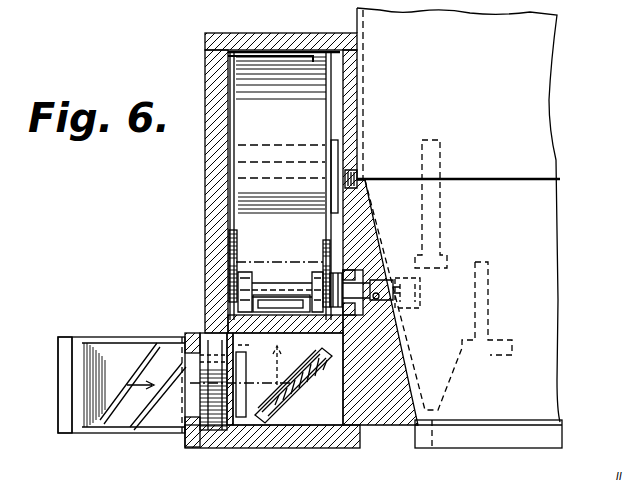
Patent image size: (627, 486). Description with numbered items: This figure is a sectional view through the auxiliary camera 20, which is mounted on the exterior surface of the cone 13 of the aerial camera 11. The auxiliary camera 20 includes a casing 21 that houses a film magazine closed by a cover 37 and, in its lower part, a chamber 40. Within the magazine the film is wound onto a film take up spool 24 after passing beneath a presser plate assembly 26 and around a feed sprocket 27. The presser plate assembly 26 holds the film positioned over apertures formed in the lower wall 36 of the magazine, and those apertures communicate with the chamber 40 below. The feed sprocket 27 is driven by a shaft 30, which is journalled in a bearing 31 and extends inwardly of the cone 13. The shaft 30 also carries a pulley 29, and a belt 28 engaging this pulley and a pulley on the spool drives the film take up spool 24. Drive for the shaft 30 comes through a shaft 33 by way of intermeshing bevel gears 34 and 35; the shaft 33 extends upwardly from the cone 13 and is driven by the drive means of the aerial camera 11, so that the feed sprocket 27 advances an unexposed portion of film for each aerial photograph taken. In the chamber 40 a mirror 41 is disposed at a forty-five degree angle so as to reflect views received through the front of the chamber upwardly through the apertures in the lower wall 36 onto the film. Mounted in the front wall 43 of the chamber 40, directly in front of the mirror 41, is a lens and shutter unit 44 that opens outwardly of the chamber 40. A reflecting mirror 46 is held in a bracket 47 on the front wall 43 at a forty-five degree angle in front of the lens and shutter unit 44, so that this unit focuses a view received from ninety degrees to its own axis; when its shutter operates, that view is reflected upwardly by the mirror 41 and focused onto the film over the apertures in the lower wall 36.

The aerial camera 11 is at (546, 61).
The cone 13 is at (414, 436).
The auxiliary camera 20 is at (270, 448).
The casing 21 is at (288, 33).
The film take up spool 24 is at (308, 52).
The presser plate assembly 26 is at (266, 305).
The feed sprocket 27 is at (228, 285).
The belt 28 is at (327, 235).
The pulley 29 is at (330, 272).
The shaft 30 is at (372, 282).
The bearing 31 is at (372, 312).
The shaft 33 is at (435, 165).
The bevel gear 34 is at (452, 264).
The bevel gear 35 is at (424, 300).
The lower wall 36 is at (260, 333).
The cover 37 is at (205, 176).
The chamber 40 is at (338, 345).
The mirror 41 is at (292, 372).
The front wall 43 is at (187, 438).
The lens and shutter unit 44 is at (213, 432).
The reflecting mirror 46 is at (106, 420).
The bracket 47 is at (58, 372).